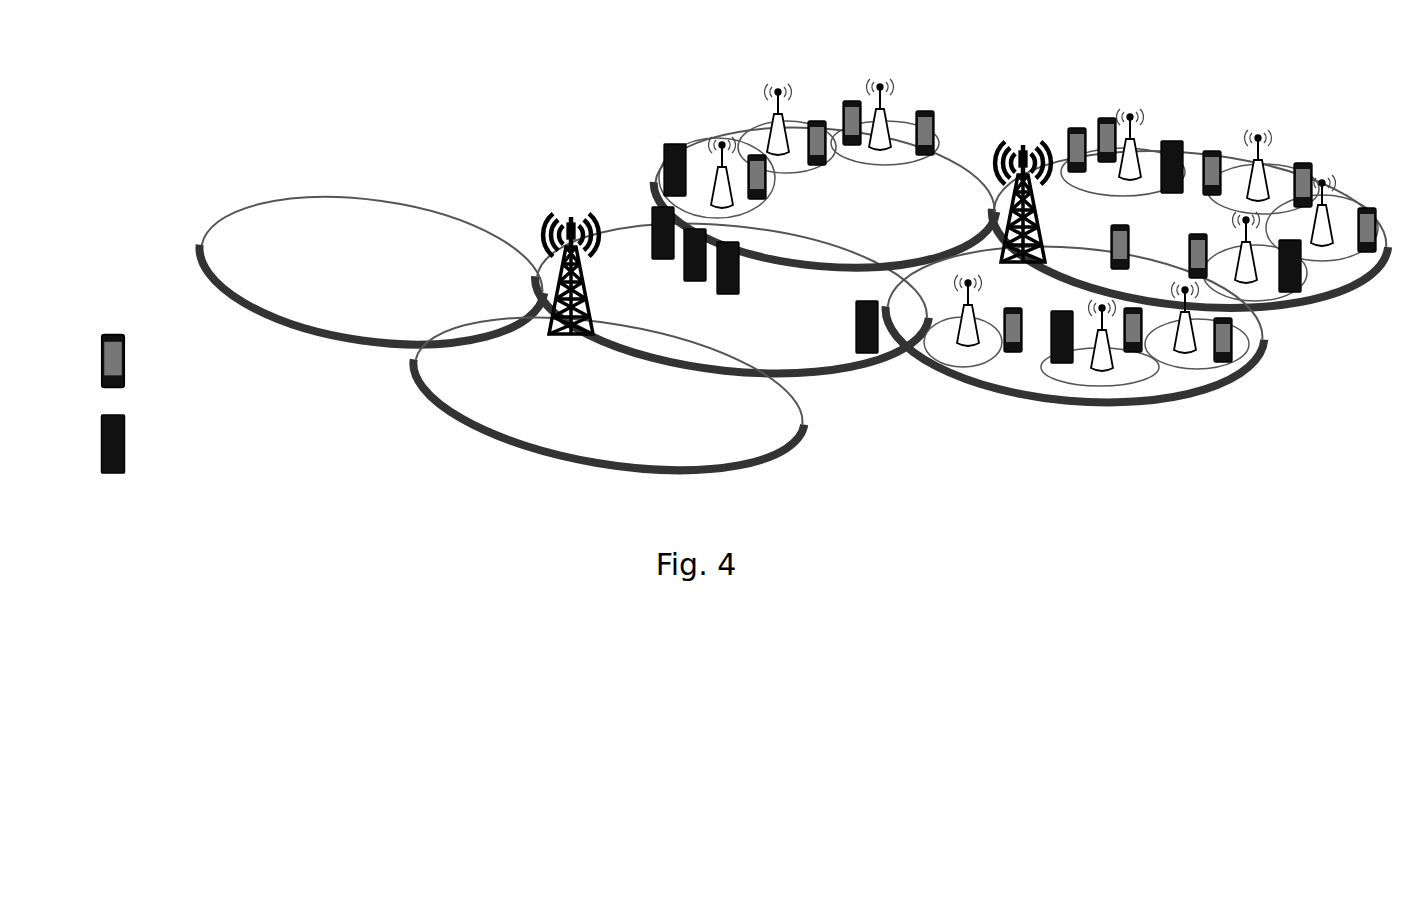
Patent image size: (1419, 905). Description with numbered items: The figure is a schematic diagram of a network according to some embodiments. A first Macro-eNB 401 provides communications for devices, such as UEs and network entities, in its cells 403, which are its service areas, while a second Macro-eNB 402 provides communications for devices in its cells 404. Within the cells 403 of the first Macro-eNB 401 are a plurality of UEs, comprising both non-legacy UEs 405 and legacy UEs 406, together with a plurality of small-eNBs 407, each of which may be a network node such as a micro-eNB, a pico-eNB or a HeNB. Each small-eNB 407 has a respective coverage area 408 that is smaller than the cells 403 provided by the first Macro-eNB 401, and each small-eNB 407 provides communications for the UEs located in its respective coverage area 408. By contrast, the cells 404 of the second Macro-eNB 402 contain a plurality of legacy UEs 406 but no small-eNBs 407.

The first Macro-eNB 401 is at (1025, 135).
The second Macro-eNB 402 is at (577, 205).
The cells 403 is at (844, 215).
The cells 404 is at (324, 261).
The non-legacy UEs 405 is at (739, 244).
The legacy UEs 406 is at (701, 307).
The small-eNBs 407 is at (870, 77).
The coverage areas 408 is at (679, 216).